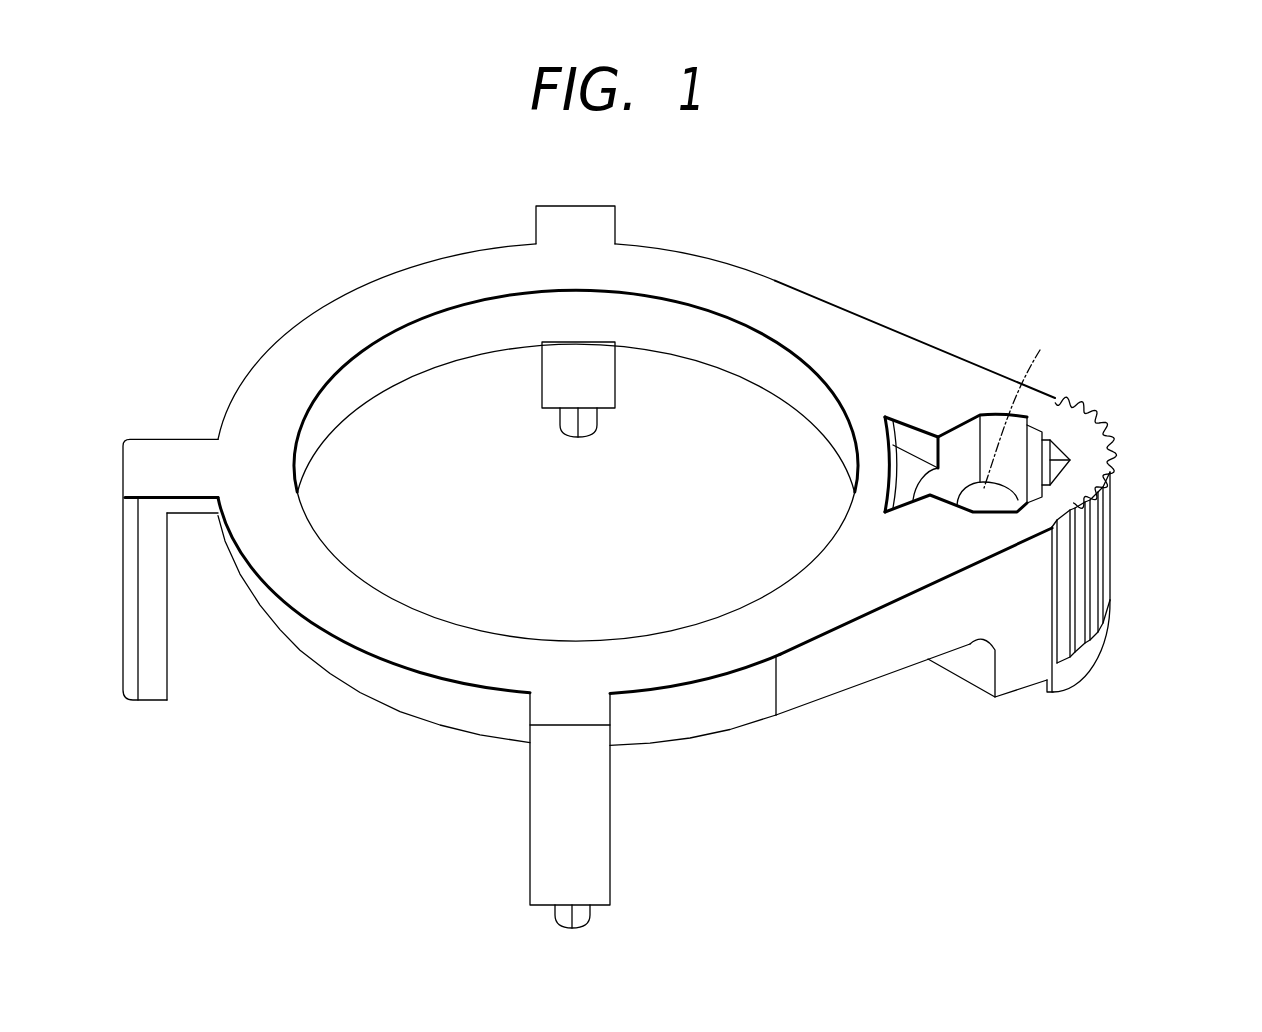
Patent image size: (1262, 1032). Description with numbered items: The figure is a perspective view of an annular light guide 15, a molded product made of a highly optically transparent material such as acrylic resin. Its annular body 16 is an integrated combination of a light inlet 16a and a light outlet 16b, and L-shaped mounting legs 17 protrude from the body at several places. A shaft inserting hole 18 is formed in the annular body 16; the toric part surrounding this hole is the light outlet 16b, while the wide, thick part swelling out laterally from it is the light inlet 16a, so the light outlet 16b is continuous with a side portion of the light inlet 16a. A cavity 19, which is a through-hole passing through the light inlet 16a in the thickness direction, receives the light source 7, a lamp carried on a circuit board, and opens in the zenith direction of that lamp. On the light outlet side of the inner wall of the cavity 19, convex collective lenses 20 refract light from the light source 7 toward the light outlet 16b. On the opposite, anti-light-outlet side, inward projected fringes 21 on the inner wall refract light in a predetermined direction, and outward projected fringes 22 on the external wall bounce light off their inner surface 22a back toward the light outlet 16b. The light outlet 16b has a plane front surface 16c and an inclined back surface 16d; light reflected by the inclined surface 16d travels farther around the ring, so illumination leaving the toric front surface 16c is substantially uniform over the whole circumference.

The annular light guide 15 is at (434, 246).
The annular body 16 is at (967, 836).
The light inlet 16a is at (985, 605).
The light outlet 16b is at (713, 713).
The front surface 16c is at (390, 637).
The inclined surface 16d is at (660, 355).
The projections 17 is at (548, 372).
The shaft inserting hole 18 is at (362, 372).
The cavity 19 is at (970, 432).
The collective lenses 20 is at (945, 430).
The light source 7 is at (1040, 350).
The inward projected fringes 21 is at (1037, 430).
The outward projected fringes 22 is at (1100, 422).
The inner surface 22a is at (1113, 457).